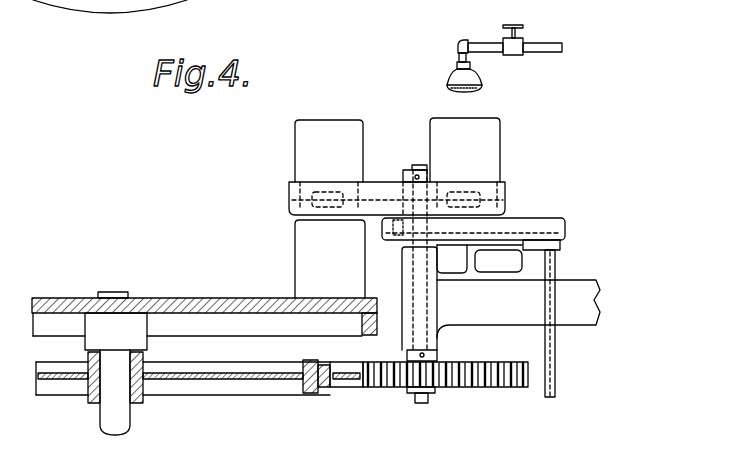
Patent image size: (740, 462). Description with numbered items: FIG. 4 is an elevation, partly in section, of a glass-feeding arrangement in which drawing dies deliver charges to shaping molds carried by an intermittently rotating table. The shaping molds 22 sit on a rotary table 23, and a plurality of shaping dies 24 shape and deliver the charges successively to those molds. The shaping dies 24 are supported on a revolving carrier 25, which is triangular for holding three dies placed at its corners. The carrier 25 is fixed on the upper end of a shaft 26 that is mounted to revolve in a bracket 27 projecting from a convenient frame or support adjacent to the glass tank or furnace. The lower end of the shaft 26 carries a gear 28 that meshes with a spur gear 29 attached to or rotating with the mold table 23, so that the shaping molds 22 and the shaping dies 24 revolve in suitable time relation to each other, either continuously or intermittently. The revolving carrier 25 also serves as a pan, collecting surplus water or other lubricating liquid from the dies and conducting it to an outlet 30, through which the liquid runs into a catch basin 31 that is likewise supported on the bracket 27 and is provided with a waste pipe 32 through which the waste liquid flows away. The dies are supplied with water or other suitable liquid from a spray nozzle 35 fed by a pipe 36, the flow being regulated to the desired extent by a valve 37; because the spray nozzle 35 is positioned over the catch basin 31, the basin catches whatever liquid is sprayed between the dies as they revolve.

The shaping mold 22 is at (295, 248).
The rotary table 23 is at (198, 297).
The shaping die 24 is at (430, 131).
The revolving carrier 25 is at (505, 190).
The shaft 26 is at (415, 168).
The bracket 27 is at (565, 278).
The gear 28 is at (380, 385).
The spur gear 29 is at (218, 390).
The outlet 30 is at (398, 237).
The catch basin 31 is at (565, 225).
The waste pipe 32 is at (556, 357).
The spray nozzle 35 is at (457, 90).
The pipe 36 is at (485, 43).
The valve 37 is at (522, 43).